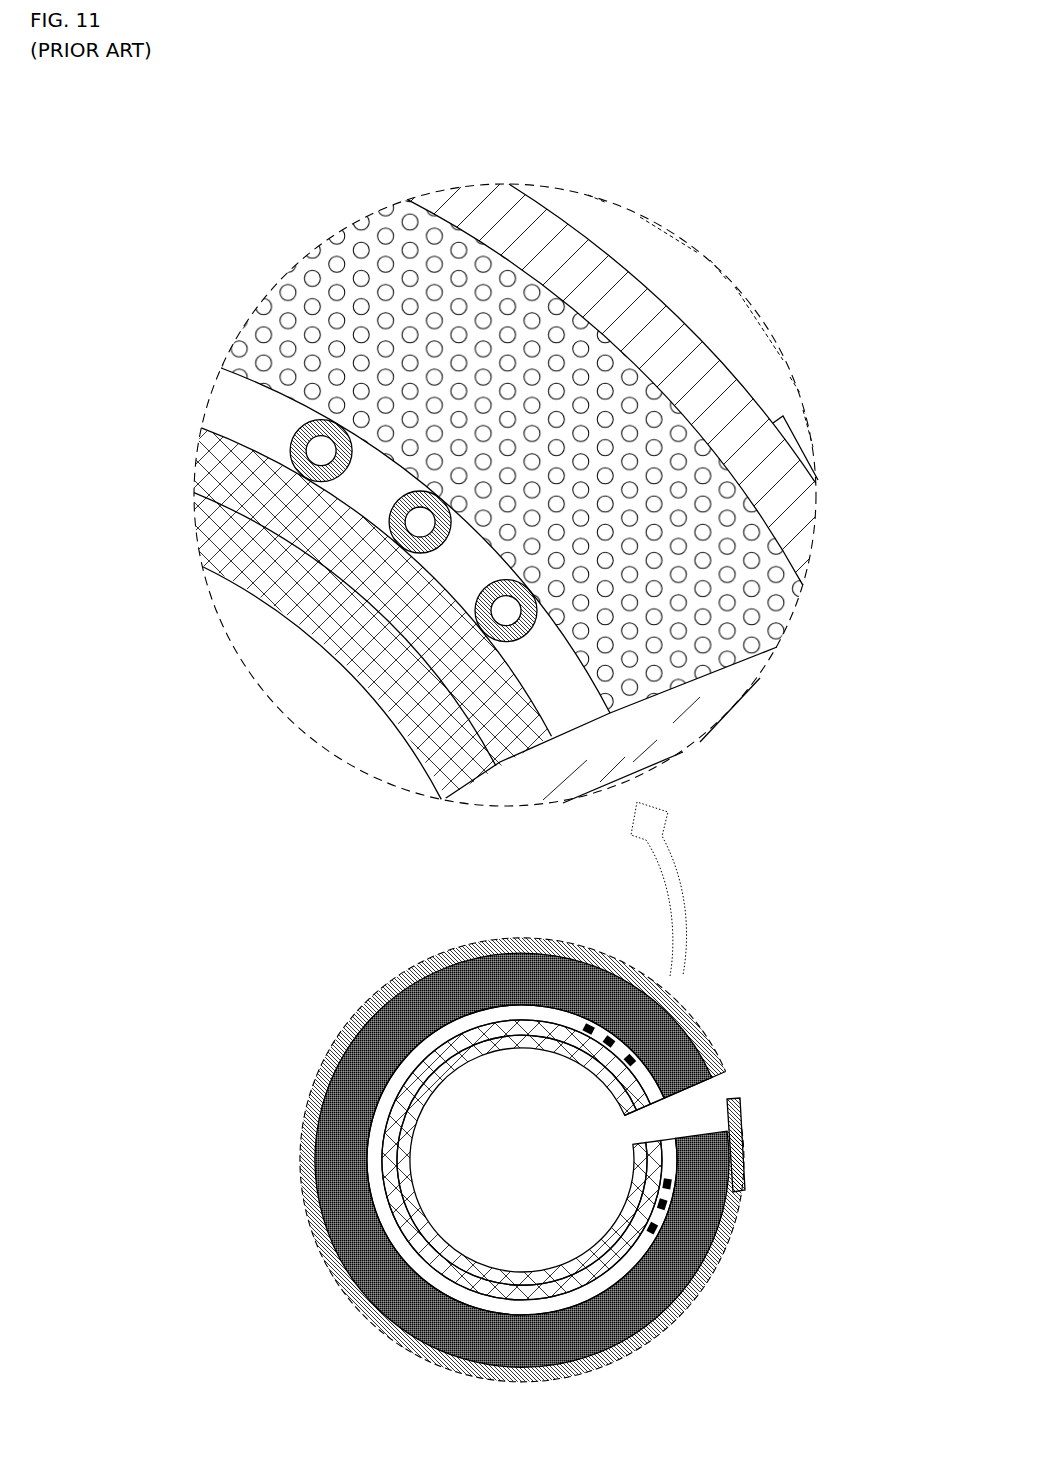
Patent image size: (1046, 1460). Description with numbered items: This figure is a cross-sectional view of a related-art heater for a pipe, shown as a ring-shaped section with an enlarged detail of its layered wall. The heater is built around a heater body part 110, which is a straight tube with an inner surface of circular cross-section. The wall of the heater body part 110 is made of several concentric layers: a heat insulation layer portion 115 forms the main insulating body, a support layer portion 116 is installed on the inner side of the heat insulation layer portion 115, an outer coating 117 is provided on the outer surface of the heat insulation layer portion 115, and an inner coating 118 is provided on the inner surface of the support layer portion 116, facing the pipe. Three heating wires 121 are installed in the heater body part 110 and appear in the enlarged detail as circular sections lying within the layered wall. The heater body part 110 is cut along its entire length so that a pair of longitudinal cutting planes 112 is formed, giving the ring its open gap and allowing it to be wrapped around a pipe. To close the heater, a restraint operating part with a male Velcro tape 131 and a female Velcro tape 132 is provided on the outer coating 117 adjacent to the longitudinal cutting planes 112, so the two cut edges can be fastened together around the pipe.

The heater body part 110 is at (659, 290).
The longitudinal cutting plane 112 is at (645, 1103).
The heat insulation layer portion 115 is at (383, 230).
The support layer portion 116 is at (388, 572).
The outer coating 117 is at (683, 383).
The inner coating 118 is at (215, 530).
The heating wire 121 is at (298, 434).
The male Velcro tape 131 is at (704, 1033).
The female Velcro tape 132 is at (740, 1112).